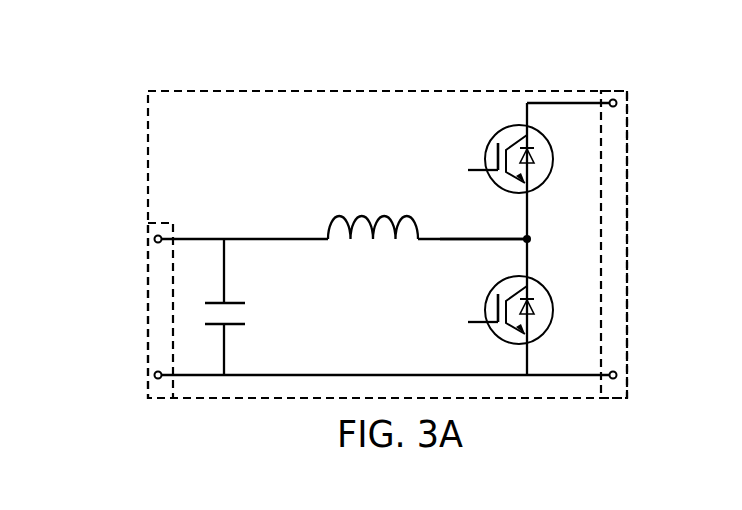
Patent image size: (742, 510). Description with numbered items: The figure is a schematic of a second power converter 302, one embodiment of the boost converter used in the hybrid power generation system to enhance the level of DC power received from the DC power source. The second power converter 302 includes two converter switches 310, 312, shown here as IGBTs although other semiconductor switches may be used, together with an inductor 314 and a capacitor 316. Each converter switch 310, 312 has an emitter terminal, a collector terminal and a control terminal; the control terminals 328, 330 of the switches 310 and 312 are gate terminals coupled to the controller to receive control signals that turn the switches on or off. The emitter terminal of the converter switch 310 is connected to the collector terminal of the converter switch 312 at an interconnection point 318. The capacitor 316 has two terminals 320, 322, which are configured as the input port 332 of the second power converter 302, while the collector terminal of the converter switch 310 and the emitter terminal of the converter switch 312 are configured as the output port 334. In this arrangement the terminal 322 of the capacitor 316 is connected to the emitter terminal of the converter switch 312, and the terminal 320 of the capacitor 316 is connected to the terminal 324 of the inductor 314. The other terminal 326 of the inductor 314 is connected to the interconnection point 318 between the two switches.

The second power converter 302 is at (373, 90).
The converter switch 310 is at (484, 155).
The converter switch 312 is at (485, 300).
The inductor 314 is at (362, 212).
The capacitor 316 is at (258, 281).
The interconnection point 318 is at (554, 226).
The terminal 320 is at (222, 250).
The terminal 322 is at (228, 365).
The terminal 324 is at (284, 238).
The terminal 326 is at (456, 242).
The control terminal 328 is at (470, 172).
The control terminal 330 is at (480, 323).
The input port 332 is at (147, 310).
The output port 334 is at (618, 216).